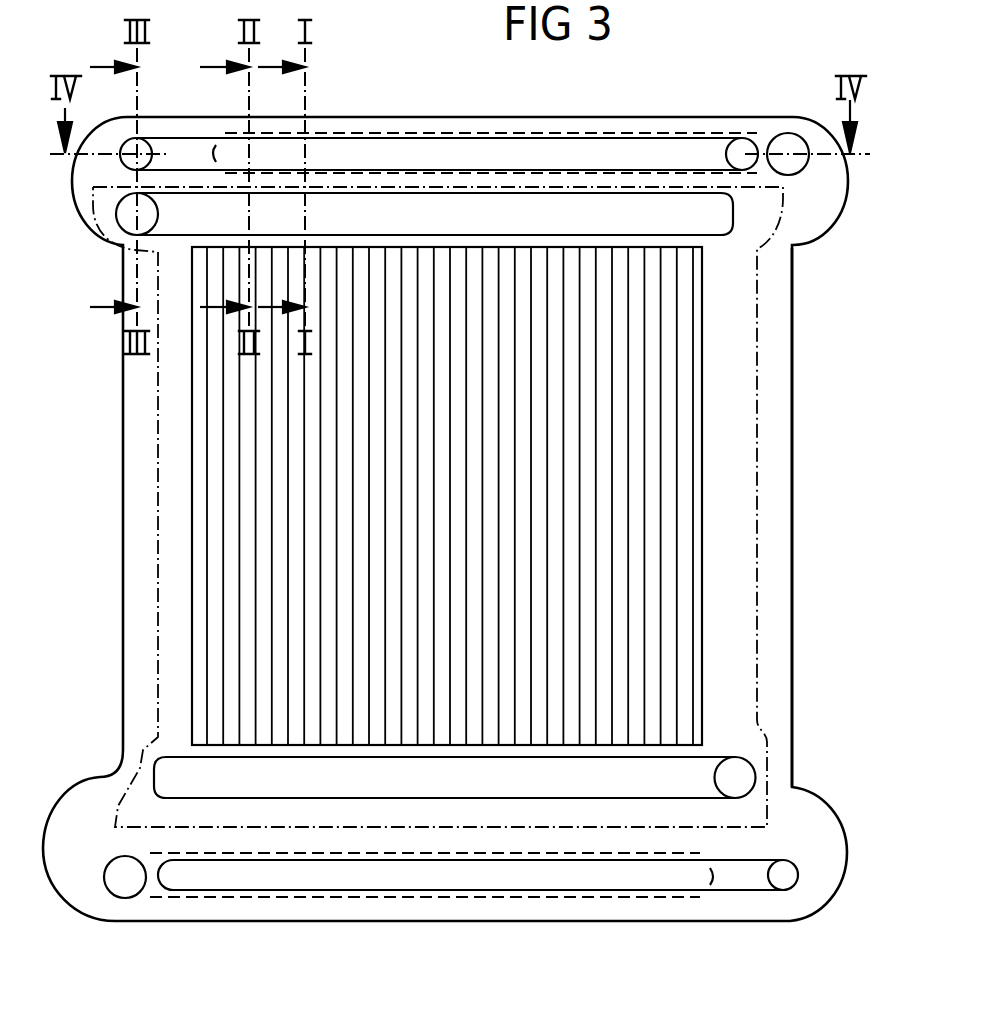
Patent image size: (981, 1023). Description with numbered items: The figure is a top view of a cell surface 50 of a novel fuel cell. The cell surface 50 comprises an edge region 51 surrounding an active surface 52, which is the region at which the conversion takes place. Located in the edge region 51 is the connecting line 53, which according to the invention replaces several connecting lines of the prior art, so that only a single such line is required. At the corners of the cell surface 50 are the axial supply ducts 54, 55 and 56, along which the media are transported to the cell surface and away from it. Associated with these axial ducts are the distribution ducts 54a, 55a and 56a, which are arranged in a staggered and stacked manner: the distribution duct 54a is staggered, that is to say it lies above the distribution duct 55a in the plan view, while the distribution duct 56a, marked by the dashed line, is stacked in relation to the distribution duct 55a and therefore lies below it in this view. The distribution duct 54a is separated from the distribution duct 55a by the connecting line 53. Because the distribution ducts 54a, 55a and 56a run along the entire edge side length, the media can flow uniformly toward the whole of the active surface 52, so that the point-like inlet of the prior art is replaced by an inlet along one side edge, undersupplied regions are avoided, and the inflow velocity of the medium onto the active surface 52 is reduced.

The cell surface 50 is at (792, 355).
The edge region 51 is at (735, 407).
The active surface 52 is at (282, 458).
The connecting line 53 is at (755, 503).
The axial supply duct 54 is at (742, 773).
The distribution duct 54a is at (658, 783).
The axial supply duct 55 is at (783, 878).
The distribution duct 55a is at (487, 873).
The axial supply duct 56 is at (122, 880).
The distribution duct 56a is at (247, 897).